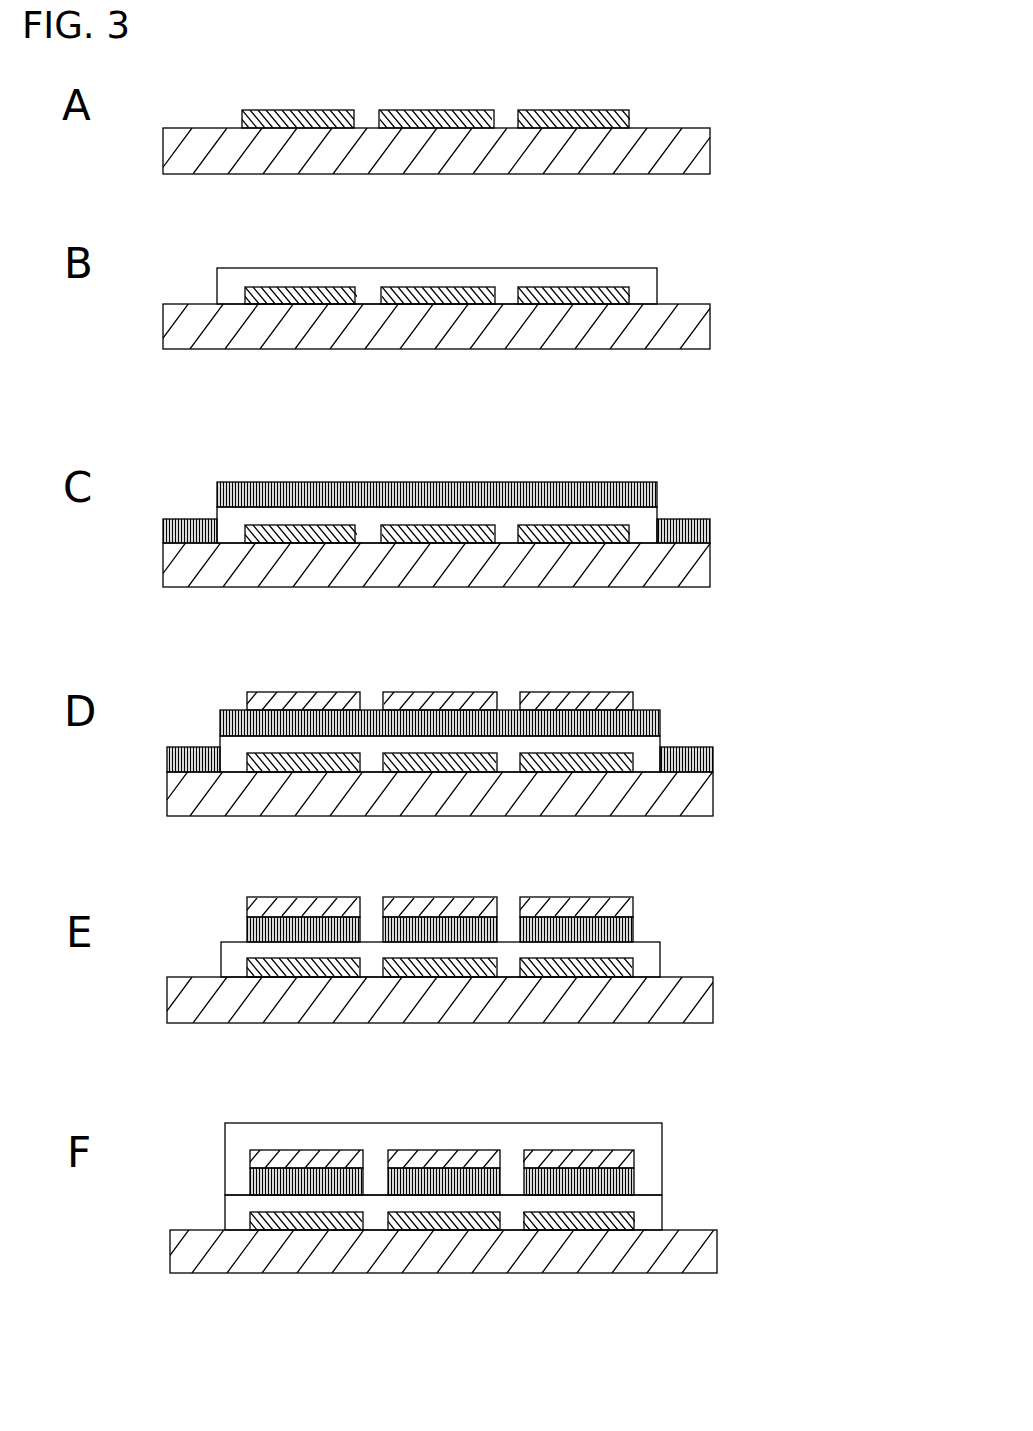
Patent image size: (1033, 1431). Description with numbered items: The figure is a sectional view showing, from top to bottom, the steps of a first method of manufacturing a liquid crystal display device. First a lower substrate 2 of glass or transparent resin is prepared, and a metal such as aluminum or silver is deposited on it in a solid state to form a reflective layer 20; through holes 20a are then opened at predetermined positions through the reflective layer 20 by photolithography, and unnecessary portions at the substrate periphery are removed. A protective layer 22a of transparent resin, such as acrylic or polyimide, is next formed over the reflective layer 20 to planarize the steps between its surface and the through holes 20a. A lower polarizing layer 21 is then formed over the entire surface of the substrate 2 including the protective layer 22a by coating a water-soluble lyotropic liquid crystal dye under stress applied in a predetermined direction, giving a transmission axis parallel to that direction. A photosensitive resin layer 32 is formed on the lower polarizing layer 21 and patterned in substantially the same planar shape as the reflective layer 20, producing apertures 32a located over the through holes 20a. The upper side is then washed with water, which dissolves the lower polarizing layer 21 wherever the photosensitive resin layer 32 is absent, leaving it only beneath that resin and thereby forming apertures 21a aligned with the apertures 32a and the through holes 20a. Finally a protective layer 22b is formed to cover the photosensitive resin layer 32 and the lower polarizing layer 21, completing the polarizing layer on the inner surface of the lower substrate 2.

The lower substrate 2 is at (703, 148).
The reflective layer 20 is at (432, 112).
The through holes 20a is at (362, 122).
The lower polarizing layer 21 is at (205, 519).
The apertures 21a is at (369, 933).
The protective layer 22a is at (640, 271).
The protective layer 22b is at (237, 1136).
The photosensitive resin layer 32 is at (318, 694).
The apertures 32a is at (365, 701).